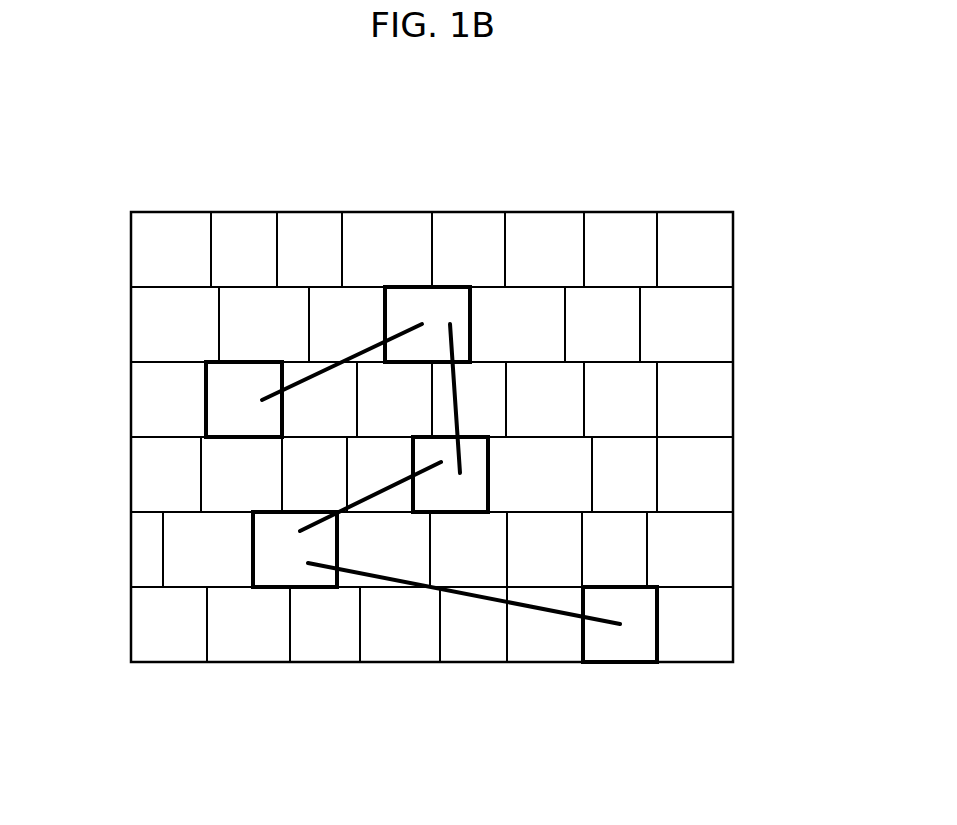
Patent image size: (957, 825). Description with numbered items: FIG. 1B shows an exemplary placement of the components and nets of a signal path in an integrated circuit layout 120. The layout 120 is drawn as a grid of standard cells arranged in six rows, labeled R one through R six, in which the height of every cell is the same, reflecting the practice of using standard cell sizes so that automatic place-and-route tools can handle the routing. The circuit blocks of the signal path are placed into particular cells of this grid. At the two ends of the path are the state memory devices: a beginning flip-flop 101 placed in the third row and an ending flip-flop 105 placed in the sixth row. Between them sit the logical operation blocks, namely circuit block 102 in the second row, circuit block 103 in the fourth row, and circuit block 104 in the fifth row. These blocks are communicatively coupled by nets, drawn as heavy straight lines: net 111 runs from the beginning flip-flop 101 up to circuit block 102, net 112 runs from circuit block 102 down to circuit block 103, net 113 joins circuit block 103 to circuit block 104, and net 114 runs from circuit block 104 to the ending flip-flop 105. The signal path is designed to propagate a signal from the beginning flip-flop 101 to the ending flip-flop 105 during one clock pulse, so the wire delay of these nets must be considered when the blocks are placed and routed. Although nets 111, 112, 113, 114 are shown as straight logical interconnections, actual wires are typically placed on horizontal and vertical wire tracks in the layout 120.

The integrated circuit layout 120 is at (692, 97).
The beginning flip-flop 101 is at (233, 382).
The circuit block 102 is at (440, 305).
The circuit block 103 is at (460, 492).
The circuit block 104 is at (272, 565).
The ending flip-flop 105 is at (633, 641).
The net 111 is at (360, 347).
The net 112 is at (457, 393).
The net 113 is at (377, 483).
The net 114 is at (553, 610).